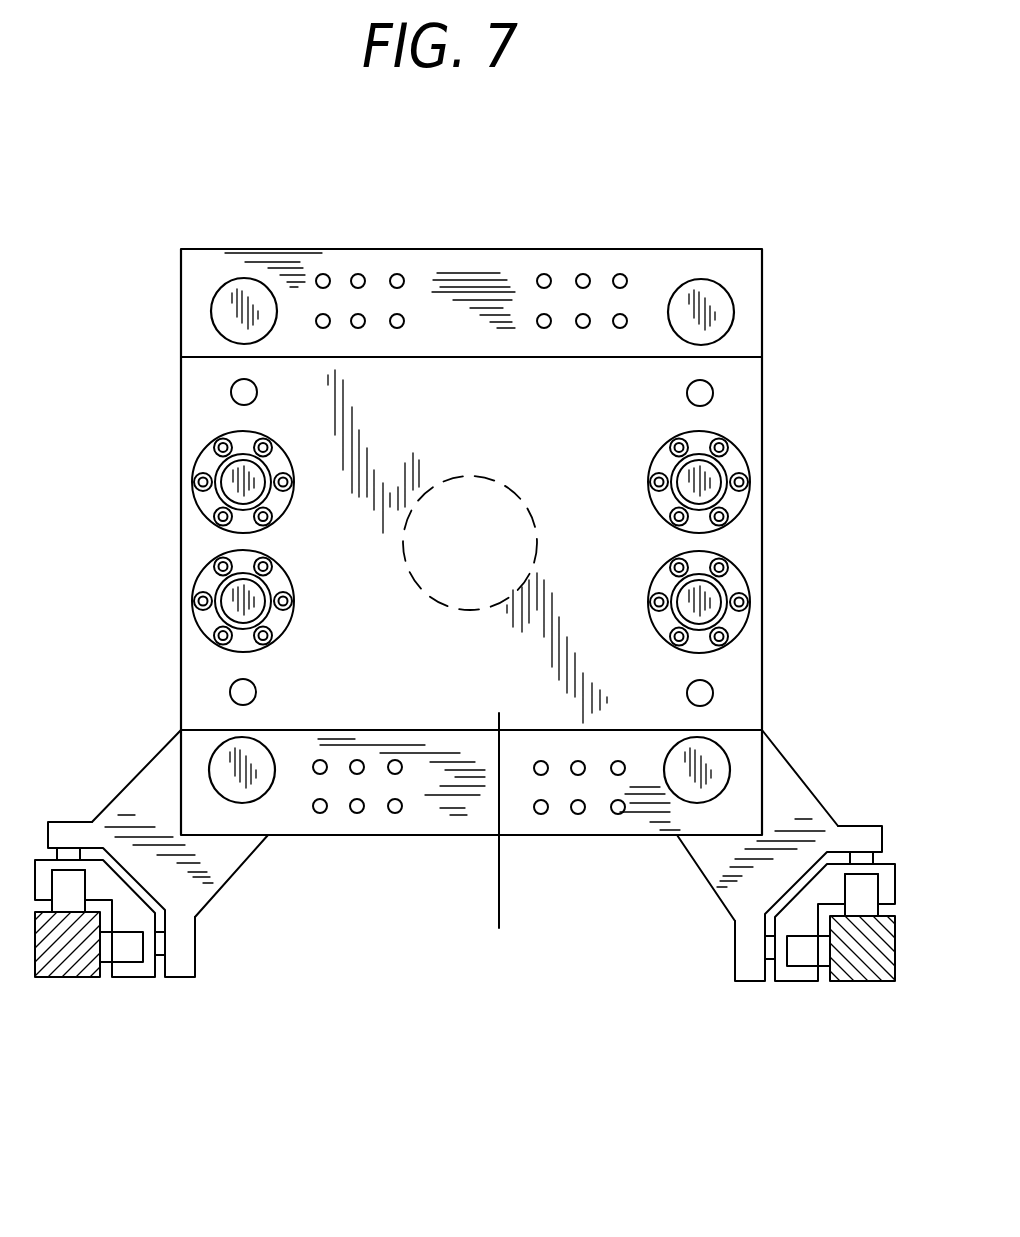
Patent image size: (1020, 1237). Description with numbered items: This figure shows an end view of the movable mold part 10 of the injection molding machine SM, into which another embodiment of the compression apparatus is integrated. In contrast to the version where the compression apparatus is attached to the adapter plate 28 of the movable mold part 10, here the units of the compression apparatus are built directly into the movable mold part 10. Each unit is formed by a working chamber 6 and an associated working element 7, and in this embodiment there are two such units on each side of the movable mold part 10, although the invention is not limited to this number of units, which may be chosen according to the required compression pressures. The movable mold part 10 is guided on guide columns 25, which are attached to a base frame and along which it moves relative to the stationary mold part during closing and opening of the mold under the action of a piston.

The movable mold part 10 is at (602, 249).
The guide columns 25 is at (237, 313).
The working chamber 6 is at (243, 482).
The working element 7 is at (223, 468).
The adapter plate 28 is at (501, 839).
The injection molding machine SM is at (210, 905).